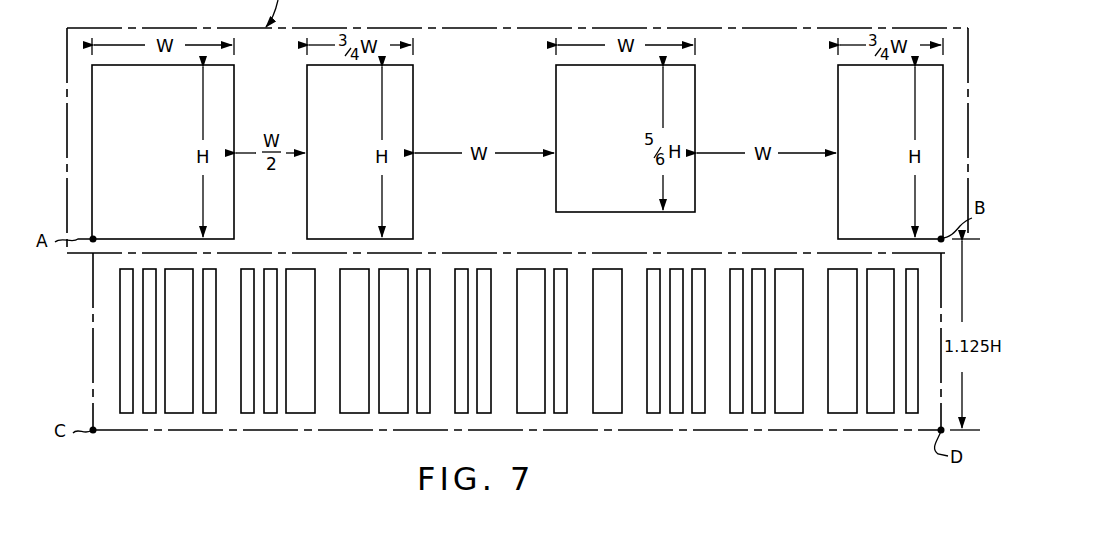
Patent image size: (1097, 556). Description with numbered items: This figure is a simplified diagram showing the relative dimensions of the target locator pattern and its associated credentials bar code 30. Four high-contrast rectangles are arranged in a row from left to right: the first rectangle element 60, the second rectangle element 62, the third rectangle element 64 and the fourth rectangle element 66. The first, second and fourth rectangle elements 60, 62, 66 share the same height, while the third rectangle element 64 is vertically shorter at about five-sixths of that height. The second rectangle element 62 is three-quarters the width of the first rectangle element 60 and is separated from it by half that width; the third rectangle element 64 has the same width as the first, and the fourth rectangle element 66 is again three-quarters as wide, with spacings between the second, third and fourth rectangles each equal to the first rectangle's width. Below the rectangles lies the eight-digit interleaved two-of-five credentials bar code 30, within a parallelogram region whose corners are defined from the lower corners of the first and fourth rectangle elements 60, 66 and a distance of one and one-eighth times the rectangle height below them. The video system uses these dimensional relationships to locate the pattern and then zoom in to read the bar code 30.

The credentials bar code 30 is at (150, 434).
The first rectangle element 60 is at (137, 108).
The second rectangle element 62 is at (349, 108).
The third rectangle element 64 is at (607, 108).
The fourth rectangle element 66 is at (879, 108).